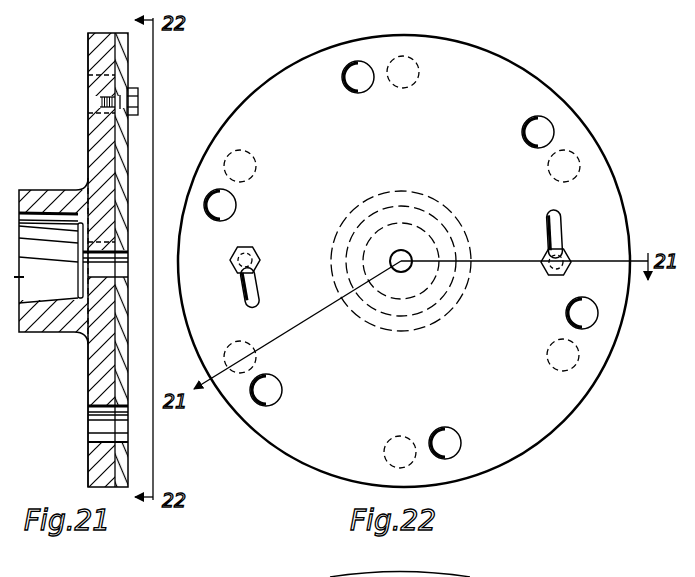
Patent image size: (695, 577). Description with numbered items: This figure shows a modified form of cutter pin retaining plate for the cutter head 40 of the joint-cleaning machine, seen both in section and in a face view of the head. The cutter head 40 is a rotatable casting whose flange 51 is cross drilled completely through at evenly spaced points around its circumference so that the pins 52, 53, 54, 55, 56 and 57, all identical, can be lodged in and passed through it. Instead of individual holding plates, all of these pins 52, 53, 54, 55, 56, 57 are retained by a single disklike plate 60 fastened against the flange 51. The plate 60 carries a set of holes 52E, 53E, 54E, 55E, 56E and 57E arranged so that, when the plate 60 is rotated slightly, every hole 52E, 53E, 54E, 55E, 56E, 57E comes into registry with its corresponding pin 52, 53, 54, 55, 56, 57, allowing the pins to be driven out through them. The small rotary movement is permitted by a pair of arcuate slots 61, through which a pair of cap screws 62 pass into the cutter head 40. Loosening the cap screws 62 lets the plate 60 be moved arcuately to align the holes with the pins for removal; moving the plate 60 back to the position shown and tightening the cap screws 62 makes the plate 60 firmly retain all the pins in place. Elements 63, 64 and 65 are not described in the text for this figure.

In FIG. 21, the cutter head 40 is at (85, 105).
In FIG. 21, the flange 51 is at (96, 137).
In FIG. 22, the pin 52 is at (406, 55).
In FIG. 22, the hole 52E is at (356, 62).
In FIG. 22, the pin 53 is at (246, 150).
In FIG. 22, the hole 53E is at (236, 205).
In FIG. 21, the pin 54 is at (92, 427).
In FIG. 22, the pin 54 is at (232, 345).
In FIG. 21, the hole 54E is at (110, 436).
In FIG. 22, the hole 54E is at (275, 381).
In FIG. 22, the pin 55 is at (396, 436).
In FIG. 22, the hole 55E is at (447, 429).
In FIG. 22, the pin 56 is at (549, 342).
In FIG. 22, the hole 56E is at (567, 306).
In FIG. 22, the pin 57 is at (547, 165).
In FIG. 22, the hole 57E is at (528, 119).
In FIG. 21, the disklike plate 60 is at (128, 337).
In FIG. 22, the disklike plate 60 is at (500, 63).
In FIG. 22, the arcuate slot 61 is at (254, 290).
In FIG. 21, the cap screw 62 is at (134, 90).
In FIG. 22, the cap screw 62 is at (258, 256).
In FIG. 22, the element 63 is at (401, 576).
In FIG. 22, the element 64 is at (362, 576).
In FIG. 22, the element 65 is at (447, 576).